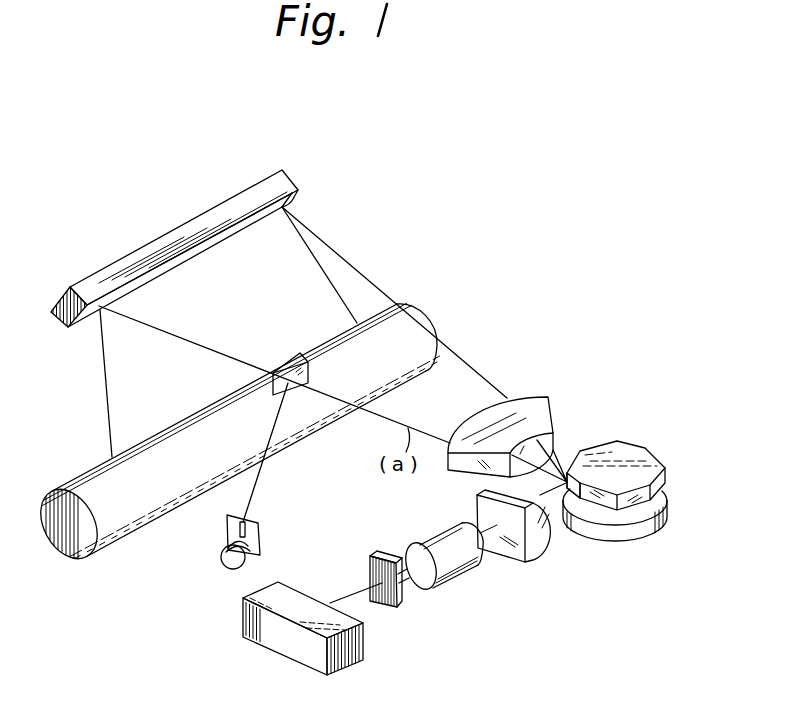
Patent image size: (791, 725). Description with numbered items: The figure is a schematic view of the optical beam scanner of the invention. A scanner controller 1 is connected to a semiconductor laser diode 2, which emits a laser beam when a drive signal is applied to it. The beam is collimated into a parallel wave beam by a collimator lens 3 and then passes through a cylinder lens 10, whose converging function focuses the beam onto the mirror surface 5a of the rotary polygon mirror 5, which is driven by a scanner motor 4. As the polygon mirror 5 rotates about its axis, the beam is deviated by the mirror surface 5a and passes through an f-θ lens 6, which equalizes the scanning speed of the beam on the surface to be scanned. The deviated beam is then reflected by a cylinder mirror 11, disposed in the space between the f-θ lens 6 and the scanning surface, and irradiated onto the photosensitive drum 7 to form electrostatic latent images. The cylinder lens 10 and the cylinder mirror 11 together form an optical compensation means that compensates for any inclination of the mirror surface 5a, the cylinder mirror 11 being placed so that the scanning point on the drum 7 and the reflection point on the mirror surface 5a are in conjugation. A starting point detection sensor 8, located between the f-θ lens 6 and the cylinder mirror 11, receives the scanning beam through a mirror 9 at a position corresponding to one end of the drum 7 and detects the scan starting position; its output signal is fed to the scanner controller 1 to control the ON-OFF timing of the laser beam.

The scanner controller 1 is at (293, 649).
The semiconductor laser diode 2 is at (385, 604).
The collimator lens 3 is at (459, 572).
The scanner motor 4 is at (655, 530).
The rotary polygon mirror 5 is at (644, 447).
The mirror surface 5a is at (578, 472).
The f-θ lens 6 is at (545, 398).
The photosensitive drum 7 is at (120, 527).
The starting point detection sensor 8 is at (235, 563).
The mirror 9 is at (290, 373).
The cylinder lens 10 is at (533, 562).
The cylinder mirror 11 is at (293, 172).